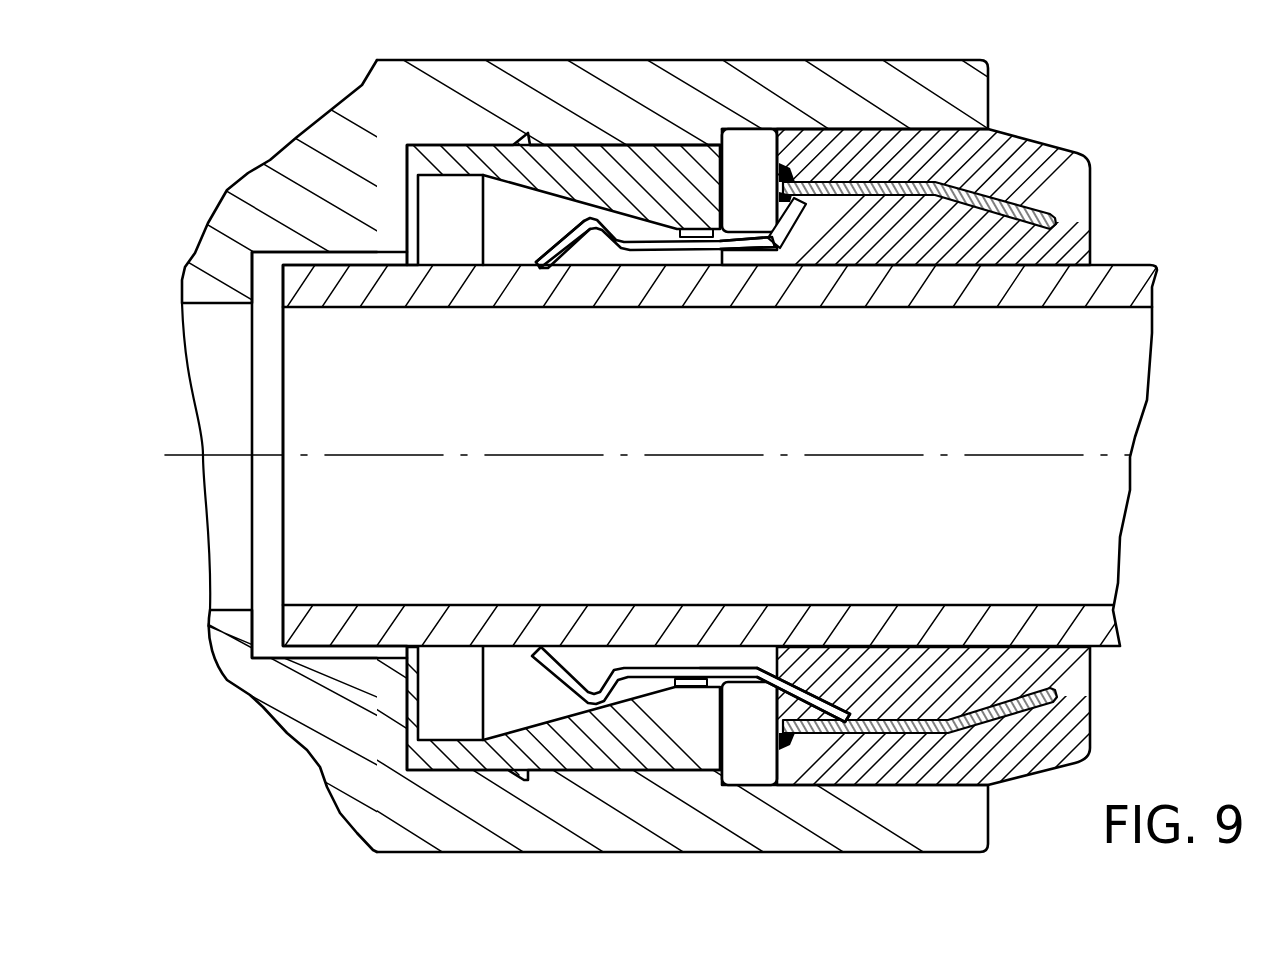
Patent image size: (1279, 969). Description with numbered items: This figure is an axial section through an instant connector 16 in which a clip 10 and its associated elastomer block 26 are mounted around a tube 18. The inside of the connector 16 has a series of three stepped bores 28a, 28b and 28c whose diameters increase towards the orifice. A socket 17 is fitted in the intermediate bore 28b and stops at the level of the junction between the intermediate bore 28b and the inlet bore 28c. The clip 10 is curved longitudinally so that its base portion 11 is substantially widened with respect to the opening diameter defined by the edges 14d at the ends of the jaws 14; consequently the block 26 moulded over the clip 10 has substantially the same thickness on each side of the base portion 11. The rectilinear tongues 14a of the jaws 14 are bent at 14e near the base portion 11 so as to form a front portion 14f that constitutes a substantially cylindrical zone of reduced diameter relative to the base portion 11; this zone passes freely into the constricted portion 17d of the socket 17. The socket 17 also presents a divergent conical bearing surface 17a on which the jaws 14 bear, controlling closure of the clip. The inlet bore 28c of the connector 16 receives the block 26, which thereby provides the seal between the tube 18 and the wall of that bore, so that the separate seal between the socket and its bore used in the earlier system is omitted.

The clip 10 is at (757, 670).
The base portion 11 is at (893, 198).
The jaws 14 is at (570, 682).
The tongues 14a is at (817, 700).
The edges 14d is at (557, 264).
The bend 14e is at (774, 249).
The front portion 14f is at (697, 238).
The connector 16 is at (287, 698).
The socket 17 is at (358, 92).
The conical bearing surface 17a is at (538, 190).
The constricted portion 17d is at (726, 130).
The tube 18 is at (1127, 372).
The elastomer block 26 is at (1040, 152).
The first stepped bore 28a is at (305, 253).
The intermediate bore 28b is at (616, 140).
The inlet bore 28c is at (940, 130).